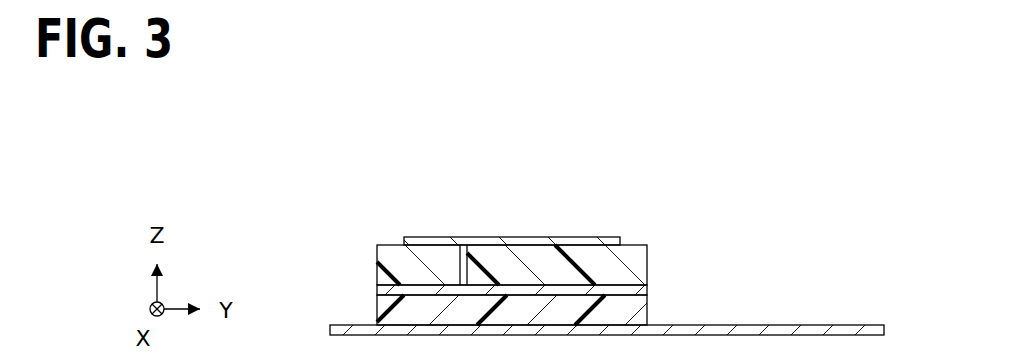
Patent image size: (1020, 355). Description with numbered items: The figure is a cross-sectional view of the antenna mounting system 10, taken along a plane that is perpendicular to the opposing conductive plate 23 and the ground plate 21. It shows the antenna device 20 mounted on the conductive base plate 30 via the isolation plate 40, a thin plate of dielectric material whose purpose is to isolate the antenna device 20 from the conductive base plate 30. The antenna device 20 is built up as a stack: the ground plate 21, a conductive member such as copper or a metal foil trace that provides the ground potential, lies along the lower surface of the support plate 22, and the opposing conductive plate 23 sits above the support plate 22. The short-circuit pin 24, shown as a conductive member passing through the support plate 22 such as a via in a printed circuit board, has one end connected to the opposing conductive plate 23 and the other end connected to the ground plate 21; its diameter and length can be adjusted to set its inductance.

The antenna mounting system 10 is at (833, 168).
The antenna device 20 is at (358, 201).
The ground plate 21 is at (648, 290).
The support plate 22 is at (648, 255).
The opposing conductive plate 23 is at (597, 237).
The short-circuit pin 24 is at (458, 269).
The conductive base plate 30 is at (843, 325).
The isolation plate 40 is at (648, 315).